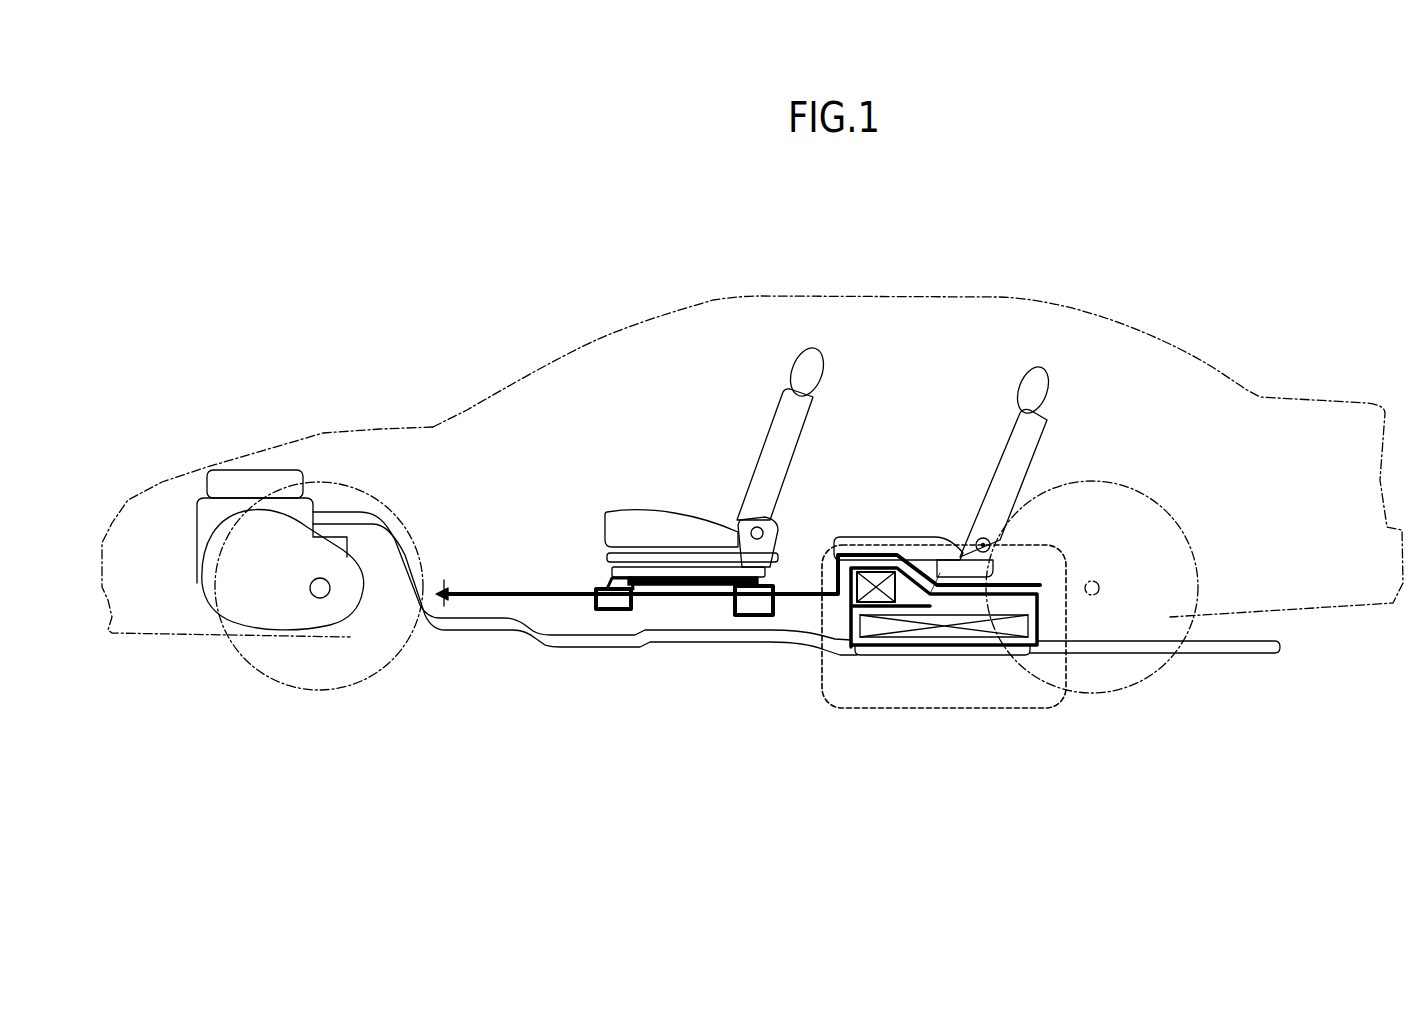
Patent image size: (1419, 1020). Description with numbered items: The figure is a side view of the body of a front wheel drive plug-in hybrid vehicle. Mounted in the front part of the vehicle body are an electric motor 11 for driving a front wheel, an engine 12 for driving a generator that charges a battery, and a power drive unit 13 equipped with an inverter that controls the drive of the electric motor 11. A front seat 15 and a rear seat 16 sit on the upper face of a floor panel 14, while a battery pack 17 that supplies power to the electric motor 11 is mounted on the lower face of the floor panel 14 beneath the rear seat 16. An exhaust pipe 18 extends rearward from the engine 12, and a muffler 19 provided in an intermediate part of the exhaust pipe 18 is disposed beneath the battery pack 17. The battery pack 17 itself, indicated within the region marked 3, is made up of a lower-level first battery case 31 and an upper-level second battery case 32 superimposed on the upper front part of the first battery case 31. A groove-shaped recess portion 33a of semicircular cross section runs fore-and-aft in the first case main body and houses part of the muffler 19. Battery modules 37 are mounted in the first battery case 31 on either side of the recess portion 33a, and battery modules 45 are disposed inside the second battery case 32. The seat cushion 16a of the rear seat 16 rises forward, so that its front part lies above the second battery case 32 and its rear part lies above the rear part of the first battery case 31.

The vehicle drive device 3 is at (968, 725).
The electric motor 11 is at (245, 571).
The engine 12 is at (205, 518).
The power drive unit 13 is at (260, 485).
The floor panel 14 is at (805, 590).
The front seat 15 is at (726, 482).
The rear seat 16 is at (970, 465).
The seat cushion 16a is at (897, 547).
The battery pack 17 is at (832, 620).
The exhaust pipe 18 is at (707, 633).
The muffler 19 is at (950, 658).
The first battery case 31 is at (1055, 627).
The second battery case 32 is at (1060, 588).
The recess portion 33a is at (960, 630).
The battery module 37 is at (940, 573).
The battery module 45 is at (875, 577).